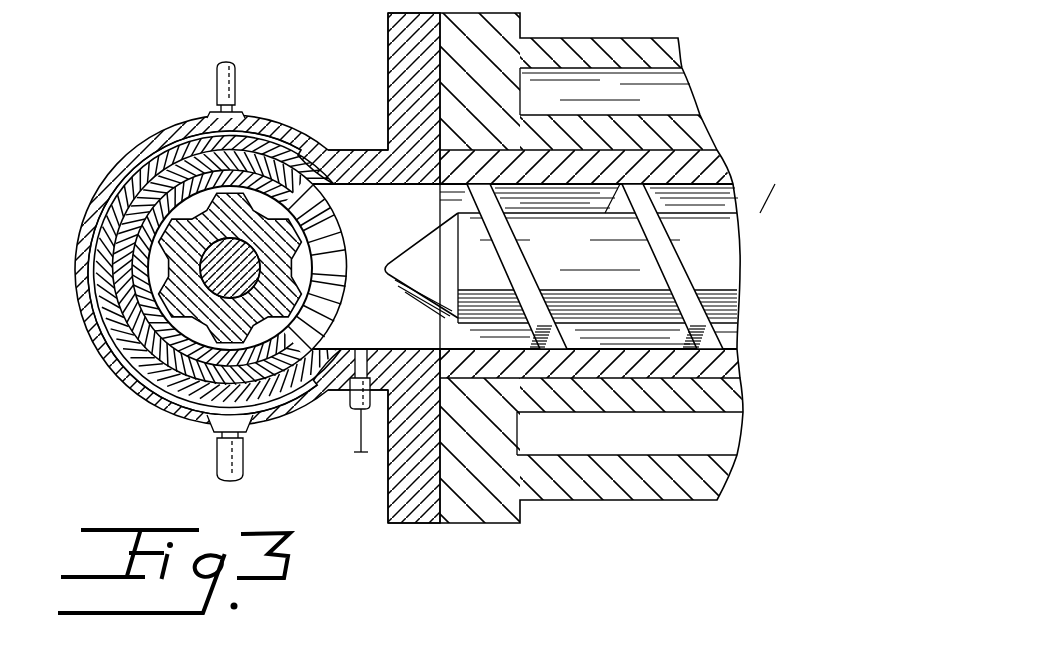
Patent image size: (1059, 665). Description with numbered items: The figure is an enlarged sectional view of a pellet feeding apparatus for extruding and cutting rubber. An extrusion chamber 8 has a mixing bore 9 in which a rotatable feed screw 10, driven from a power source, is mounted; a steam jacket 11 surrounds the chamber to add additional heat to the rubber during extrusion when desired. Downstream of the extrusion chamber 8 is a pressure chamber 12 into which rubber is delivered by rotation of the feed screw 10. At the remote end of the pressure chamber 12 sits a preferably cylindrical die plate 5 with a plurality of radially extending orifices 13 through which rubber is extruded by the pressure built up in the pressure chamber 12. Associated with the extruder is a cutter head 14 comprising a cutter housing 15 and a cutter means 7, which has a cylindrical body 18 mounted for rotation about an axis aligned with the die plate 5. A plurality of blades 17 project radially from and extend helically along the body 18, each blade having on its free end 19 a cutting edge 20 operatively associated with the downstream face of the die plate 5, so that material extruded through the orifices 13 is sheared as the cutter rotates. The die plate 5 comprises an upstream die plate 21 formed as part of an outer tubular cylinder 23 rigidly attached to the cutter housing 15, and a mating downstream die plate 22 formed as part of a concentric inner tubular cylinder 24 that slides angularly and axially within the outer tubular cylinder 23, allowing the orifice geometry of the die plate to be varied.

The die plate 5 is at (333, 218).
The cutter means 7 is at (132, 357).
The extrusion chamber 8 is at (586, 38).
The mixing bore 9 is at (733, 200).
The feed screw 10 is at (728, 268).
The steam jacket 11 is at (688, 93).
The pressure chamber 12 is at (367, 197).
The radially extending orifices 13 is at (342, 270).
The cutter head 14 is at (388, 47).
The cutter housing 15 is at (338, 380).
The blades 17 is at (163, 240).
The body 18 is at (175, 288).
The free end 19 is at (172, 200).
The cutting edge 20 is at (207, 172).
The upstream die plate 21 is at (337, 247).
The downstream die plate 22 is at (332, 272).
The outer tubular cylinder 23 is at (123, 270).
The inner tubular cylinder 24 is at (147, 173).